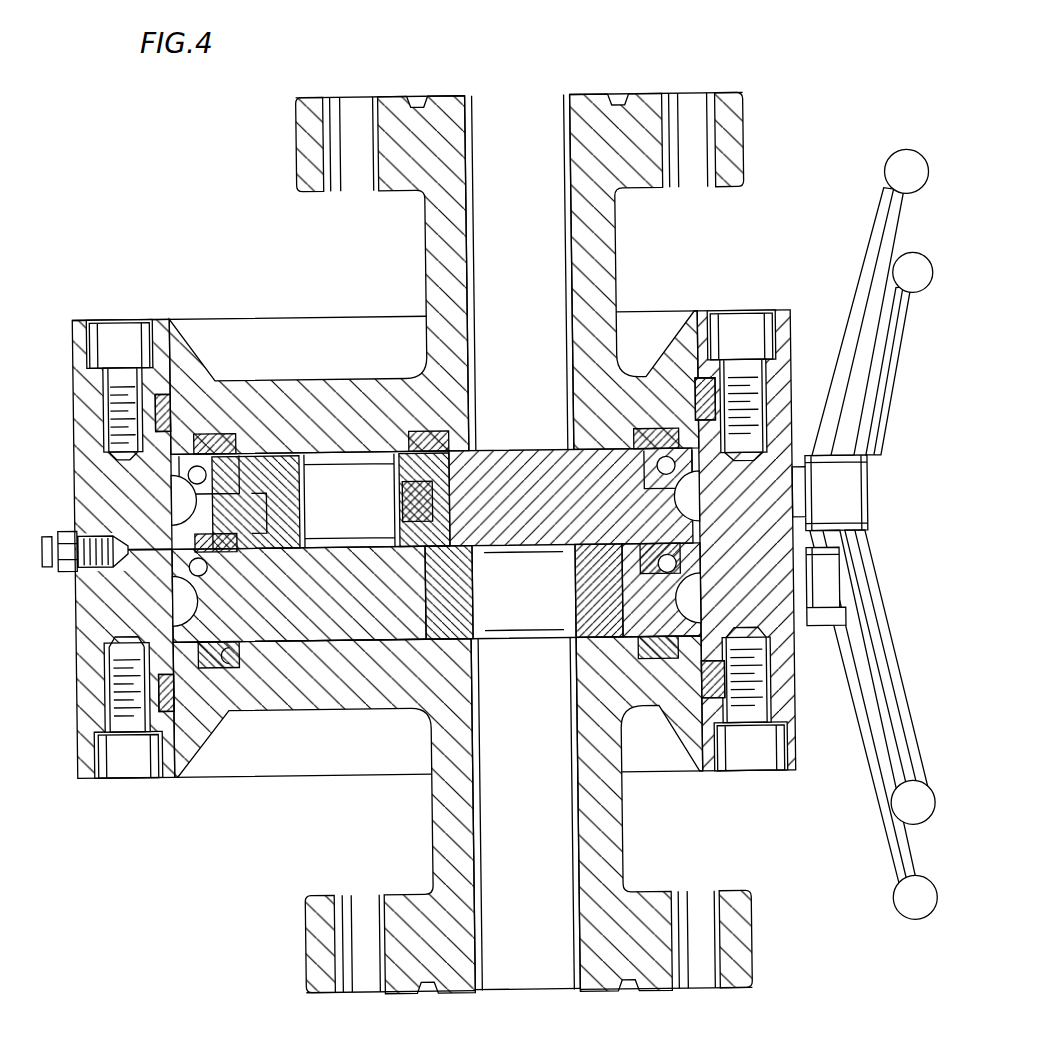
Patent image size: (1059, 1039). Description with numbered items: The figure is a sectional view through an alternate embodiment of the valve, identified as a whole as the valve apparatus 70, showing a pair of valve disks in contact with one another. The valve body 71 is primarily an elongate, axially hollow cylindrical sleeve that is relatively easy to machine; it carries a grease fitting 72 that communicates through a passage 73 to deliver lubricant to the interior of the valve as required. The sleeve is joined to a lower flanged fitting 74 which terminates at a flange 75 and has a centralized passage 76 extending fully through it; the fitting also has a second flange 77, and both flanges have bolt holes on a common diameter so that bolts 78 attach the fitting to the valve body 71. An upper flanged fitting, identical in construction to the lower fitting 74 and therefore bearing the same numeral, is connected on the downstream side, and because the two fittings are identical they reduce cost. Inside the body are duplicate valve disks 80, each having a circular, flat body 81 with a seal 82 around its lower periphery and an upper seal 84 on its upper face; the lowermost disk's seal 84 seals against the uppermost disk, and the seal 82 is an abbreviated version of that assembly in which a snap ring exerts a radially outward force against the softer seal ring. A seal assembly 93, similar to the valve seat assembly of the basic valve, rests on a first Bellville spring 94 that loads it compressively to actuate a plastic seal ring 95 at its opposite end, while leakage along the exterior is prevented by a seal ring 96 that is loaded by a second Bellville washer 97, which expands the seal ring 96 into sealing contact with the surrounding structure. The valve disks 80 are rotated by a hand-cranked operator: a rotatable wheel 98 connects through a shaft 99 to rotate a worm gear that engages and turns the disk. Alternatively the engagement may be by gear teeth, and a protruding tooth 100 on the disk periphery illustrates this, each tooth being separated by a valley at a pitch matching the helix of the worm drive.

The alternate embodiment of the valve 70 is at (204, 869).
The valve body 71 is at (90, 624).
The grease fitting 72 is at (42, 544).
The passage 73 is at (140, 552).
The lower flanged fitting 74 is at (433, 545).
The flange 75 is at (745, 944).
The centralized passage 76 is at (577, 957).
The second flange 77 is at (95, 732).
The bolts 78 is at (124, 764).
The valve disks 80 is at (556, 660).
The circular flat body 81 is at (436, 583).
The seal 82 is at (218, 668).
The upper seal 84 is at (227, 558).
The seal assembly 93 is at (296, 497).
The first Bellville spring 94 is at (425, 520).
The plastic seal ring 95 is at (422, 447).
The seal ring 96 is at (575, 565).
The second Bellville washer 97 is at (567, 603).
The rotatable wheel 98 is at (890, 861).
The shaft 99 is at (801, 583).
The protruding tooth 100 is at (172, 500).